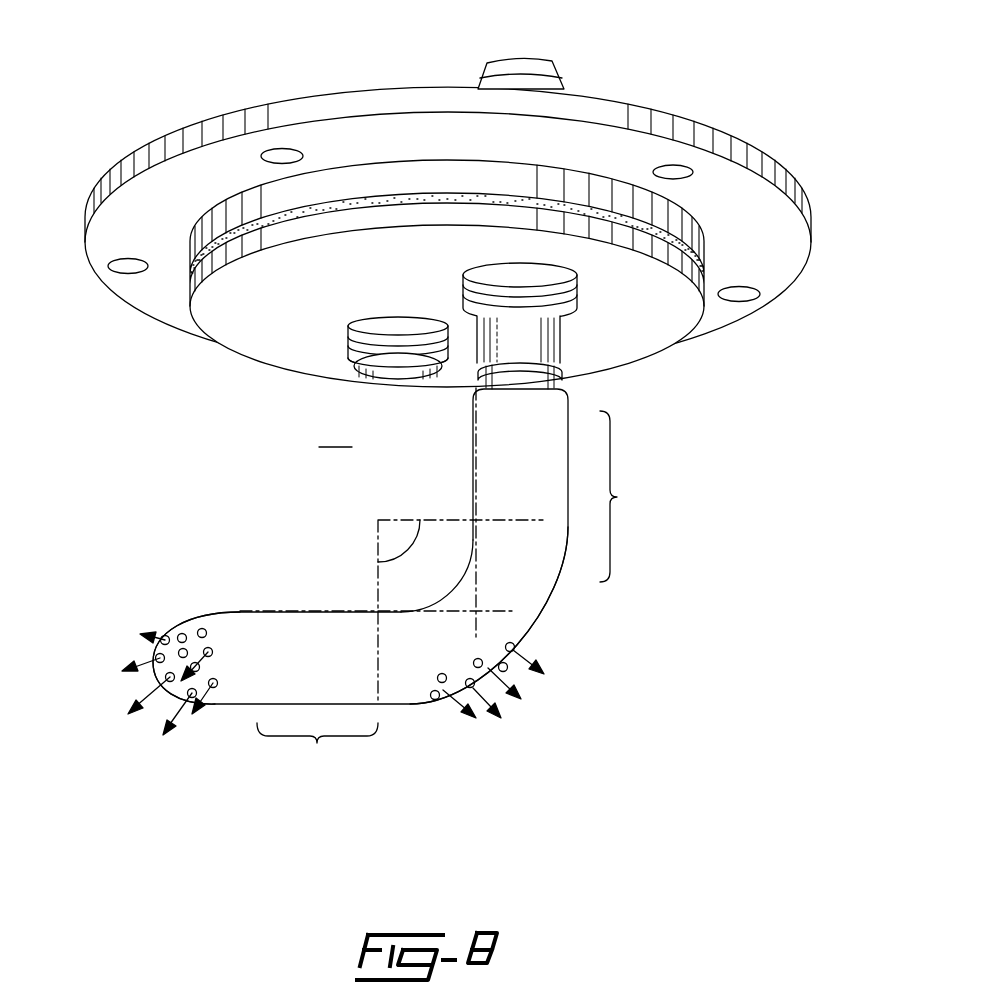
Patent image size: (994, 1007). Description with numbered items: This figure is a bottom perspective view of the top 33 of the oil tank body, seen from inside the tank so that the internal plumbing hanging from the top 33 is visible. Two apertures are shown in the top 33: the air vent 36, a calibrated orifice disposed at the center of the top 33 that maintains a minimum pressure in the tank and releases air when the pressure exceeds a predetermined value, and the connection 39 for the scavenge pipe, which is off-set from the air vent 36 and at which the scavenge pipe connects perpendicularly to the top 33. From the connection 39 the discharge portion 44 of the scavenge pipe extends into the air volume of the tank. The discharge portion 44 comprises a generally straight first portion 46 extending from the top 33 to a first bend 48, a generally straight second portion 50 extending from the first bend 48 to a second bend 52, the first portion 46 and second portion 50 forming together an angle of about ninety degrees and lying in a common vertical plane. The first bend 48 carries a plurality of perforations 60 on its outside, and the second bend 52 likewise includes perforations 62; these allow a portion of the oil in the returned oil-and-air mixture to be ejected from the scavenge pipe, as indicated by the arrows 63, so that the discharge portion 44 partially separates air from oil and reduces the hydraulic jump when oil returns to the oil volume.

The top 33 is at (553, 140).
The air vent 36 is at (391, 334).
The connection 39 is at (520, 318).
The discharge portion 44 is at (378, 589).
The first portion 46 is at (625, 496).
The first bend 48 is at (458, 597).
The second portion 50 is at (317, 749).
The second bend 52 is at (241, 615).
The perforations 60 is at (530, 618).
The perforations 62 is at (192, 693).
The arrow 63 is at (322, 680).